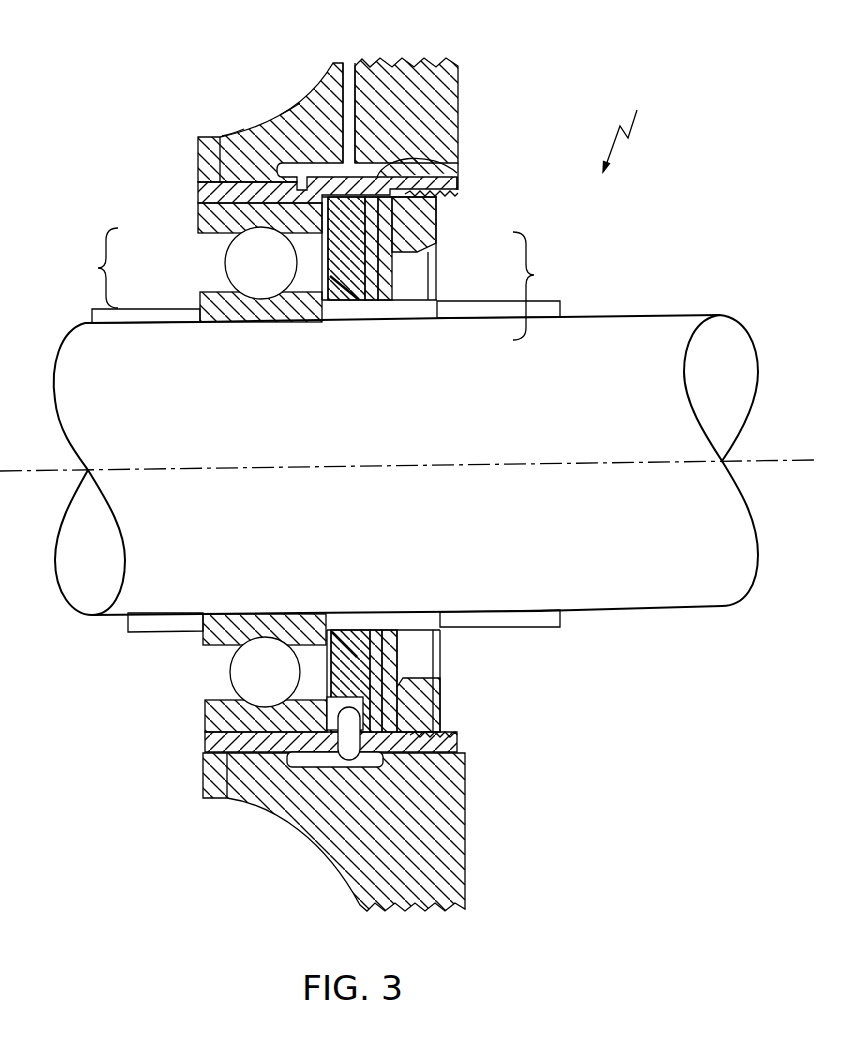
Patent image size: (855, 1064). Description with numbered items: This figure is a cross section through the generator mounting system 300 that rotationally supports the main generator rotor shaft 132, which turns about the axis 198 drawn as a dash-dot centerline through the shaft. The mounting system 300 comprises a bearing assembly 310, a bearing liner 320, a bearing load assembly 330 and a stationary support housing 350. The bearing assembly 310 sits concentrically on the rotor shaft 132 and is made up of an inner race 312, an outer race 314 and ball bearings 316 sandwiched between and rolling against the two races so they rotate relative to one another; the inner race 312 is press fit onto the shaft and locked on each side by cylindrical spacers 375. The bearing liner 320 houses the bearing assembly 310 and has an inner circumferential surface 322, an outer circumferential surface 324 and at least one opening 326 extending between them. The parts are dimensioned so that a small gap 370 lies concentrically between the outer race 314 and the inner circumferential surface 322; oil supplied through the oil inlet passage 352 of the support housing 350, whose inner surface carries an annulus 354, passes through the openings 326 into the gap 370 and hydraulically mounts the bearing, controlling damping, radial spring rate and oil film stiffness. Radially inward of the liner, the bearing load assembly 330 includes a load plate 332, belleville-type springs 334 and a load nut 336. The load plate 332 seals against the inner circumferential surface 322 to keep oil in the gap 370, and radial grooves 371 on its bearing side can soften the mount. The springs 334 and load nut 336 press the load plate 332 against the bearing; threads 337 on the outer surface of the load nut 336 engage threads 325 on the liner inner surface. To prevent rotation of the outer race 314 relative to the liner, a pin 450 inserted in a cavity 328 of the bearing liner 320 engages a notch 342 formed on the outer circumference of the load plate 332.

The main generator rotor shaft 132 is at (638, 332).
The axis 198 is at (774, 462).
The generator mounting system 300 is at (631, 127).
The bearing assembly 310 is at (181, 262).
The inner race 312 is at (200, 300).
The outer race 314 is at (200, 232).
The ball bearings 316 is at (226, 263).
The bearing liner 320 is at (234, 122).
The inner circumferential surface 322 is at (216, 722).
The outer circumferential surface 324 is at (240, 130).
The threads 325 is at (460, 190).
The opening 326 is at (295, 106).
The cavity 328 is at (336, 762).
The bearing load assembly 330 is at (456, 279).
The load plate 332 is at (366, 306).
The belleville-type springs 334 is at (398, 274).
The load nut 336 is at (438, 240).
The threads 337 is at (438, 206).
The notch 342 is at (343, 640).
The stationary support housing 350 is at (441, 123).
The oil inlet passage 352 is at (346, 61).
The annulus 354 is at (455, 158).
The gap 370 is at (200, 206).
The radial grooves 371 is at (332, 306).
The cylindrical spacers 375 is at (92, 314).
The pin 450 is at (354, 762).